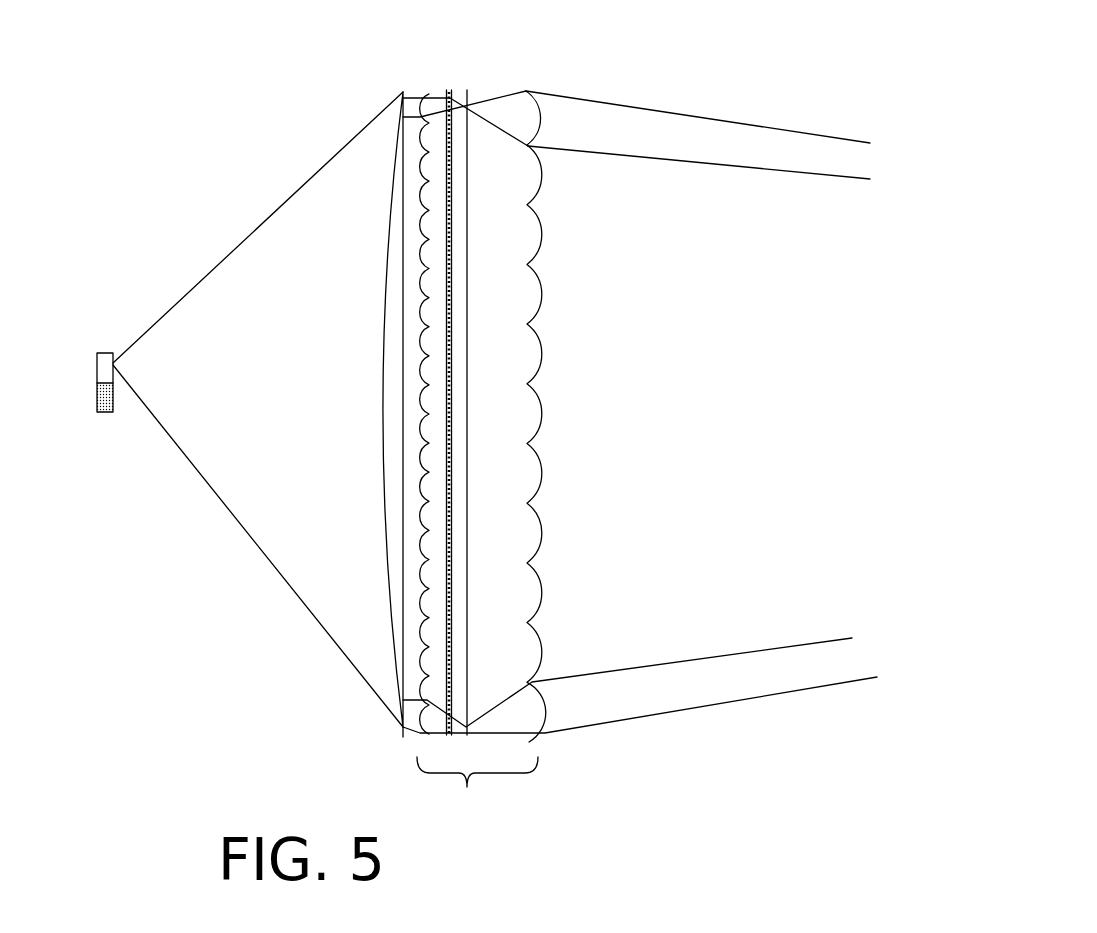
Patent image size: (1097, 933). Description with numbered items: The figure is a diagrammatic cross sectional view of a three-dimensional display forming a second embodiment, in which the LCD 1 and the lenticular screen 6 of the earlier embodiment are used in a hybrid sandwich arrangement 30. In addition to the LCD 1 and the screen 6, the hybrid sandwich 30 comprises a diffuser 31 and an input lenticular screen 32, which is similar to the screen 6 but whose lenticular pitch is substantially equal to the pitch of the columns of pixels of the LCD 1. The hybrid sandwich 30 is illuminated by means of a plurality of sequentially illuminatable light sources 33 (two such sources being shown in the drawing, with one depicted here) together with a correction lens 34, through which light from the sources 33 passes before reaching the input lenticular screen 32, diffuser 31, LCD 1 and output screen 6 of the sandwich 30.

The LCD 1 is at (448, 96).
The lenticular screen 6 is at (502, 122).
The hybrid sandwich arrangement 30 is at (477, 794).
The diffuser 31 is at (471, 90).
The input lenticular screen 32 is at (432, 108).
The light source 33 is at (90, 368).
The correction lens 34 is at (393, 636).